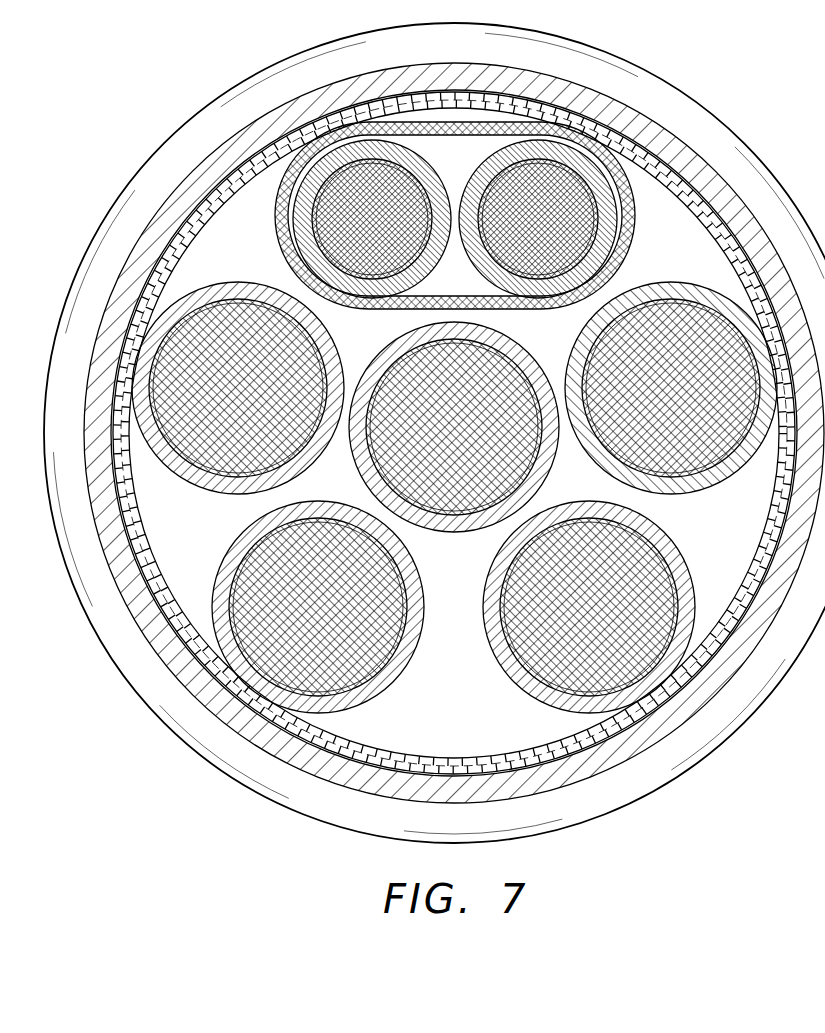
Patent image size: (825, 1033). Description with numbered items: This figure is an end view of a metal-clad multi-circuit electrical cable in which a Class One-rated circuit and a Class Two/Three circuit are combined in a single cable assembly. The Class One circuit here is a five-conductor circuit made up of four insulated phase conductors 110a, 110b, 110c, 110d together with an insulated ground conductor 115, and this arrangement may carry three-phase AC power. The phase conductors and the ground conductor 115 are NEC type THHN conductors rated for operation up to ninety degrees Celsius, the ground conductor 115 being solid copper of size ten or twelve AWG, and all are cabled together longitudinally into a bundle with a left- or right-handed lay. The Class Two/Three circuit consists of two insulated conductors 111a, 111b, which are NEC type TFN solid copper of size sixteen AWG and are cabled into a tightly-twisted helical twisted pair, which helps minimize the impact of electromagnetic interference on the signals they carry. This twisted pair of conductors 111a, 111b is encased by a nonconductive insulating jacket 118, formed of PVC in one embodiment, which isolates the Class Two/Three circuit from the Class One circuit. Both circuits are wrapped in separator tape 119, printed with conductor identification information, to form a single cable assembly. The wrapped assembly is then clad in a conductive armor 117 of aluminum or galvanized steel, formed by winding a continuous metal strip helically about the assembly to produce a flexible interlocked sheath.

The conductive armor 117 is at (698, 157).
The separator tape 119 is at (747, 607).
The insulating jacket 118 is at (275, 222).
The insulated conductor 111a is at (398, 231).
The insulated conductor 111b is at (566, 231).
The insulated phase conductor 110a is at (267, 402).
The insulated phase conductor 110b is at (346, 616).
The insulated phase conductor 110c is at (488, 442).
The insulated phase conductor 110d is at (618, 616).
The insulated ground conductor 115 is at (693, 402).